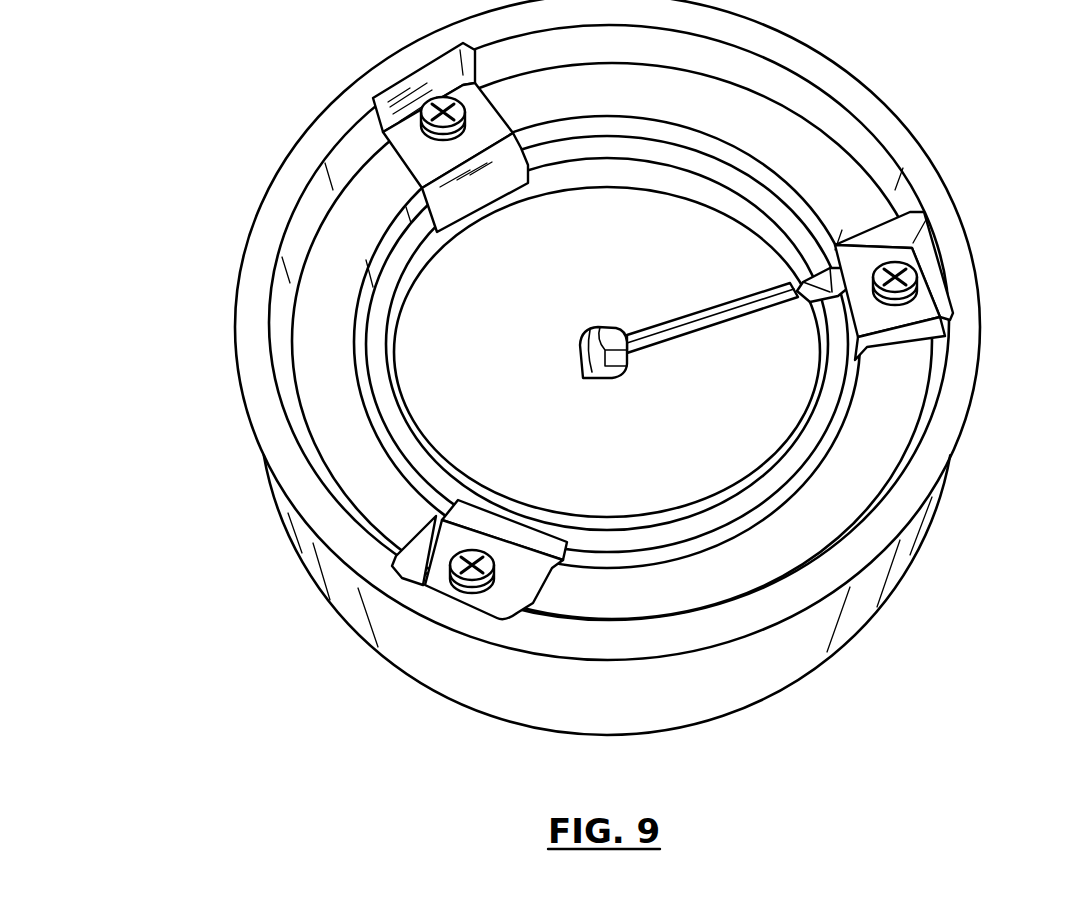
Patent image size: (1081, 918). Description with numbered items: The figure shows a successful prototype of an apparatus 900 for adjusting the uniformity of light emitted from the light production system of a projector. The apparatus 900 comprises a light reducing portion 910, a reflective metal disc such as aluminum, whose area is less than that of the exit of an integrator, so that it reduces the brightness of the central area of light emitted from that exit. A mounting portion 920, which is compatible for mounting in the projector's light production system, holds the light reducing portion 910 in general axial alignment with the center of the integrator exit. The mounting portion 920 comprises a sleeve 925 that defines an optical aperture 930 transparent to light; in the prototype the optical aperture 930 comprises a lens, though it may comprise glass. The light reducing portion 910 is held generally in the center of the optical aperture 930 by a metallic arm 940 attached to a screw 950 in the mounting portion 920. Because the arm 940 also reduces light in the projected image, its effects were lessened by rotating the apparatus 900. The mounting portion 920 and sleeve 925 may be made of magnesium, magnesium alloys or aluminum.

The apparatus 900 is at (244, 168).
The light reducing portion 910 is at (596, 374).
The mounting portion 920 is at (917, 169).
The sleeve 925 is at (361, 457).
The optical aperture 930 is at (708, 425).
The metallic arm 940 is at (712, 322).
The screw 950 is at (903, 273).